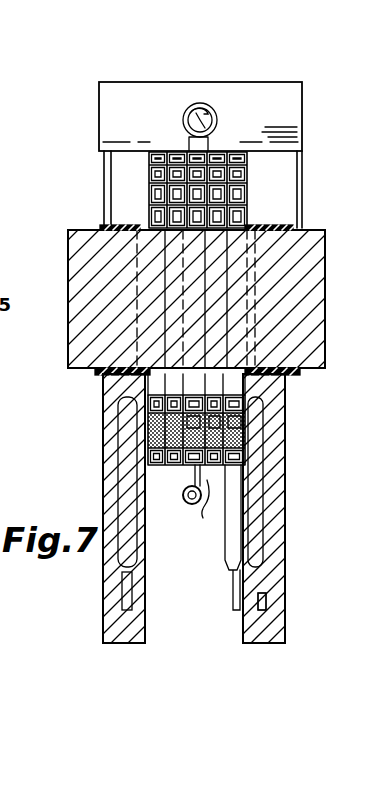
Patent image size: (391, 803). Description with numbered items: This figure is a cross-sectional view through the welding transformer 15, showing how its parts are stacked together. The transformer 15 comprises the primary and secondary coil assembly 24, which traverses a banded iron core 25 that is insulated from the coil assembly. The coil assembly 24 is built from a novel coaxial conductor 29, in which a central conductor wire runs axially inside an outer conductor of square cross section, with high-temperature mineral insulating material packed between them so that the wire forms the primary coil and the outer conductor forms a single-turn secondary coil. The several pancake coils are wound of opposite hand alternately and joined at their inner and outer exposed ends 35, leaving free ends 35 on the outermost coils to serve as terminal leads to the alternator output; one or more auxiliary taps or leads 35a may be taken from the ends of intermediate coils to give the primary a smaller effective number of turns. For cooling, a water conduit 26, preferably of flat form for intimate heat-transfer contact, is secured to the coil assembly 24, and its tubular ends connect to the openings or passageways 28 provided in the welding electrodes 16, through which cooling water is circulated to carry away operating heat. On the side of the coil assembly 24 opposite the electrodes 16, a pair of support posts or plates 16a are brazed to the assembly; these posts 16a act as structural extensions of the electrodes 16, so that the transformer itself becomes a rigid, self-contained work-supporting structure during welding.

The welding electrodes 16 is at (148, 88).
The openings or passageways 28 is at (218, 110).
The coaxial conductor 29 is at (247, 193).
The transformer 15 is at (330, 307).
The banded iron core 25 is at (317, 262).
The primary and secondary coil assembly 24 is at (240, 382).
The exposed ends 35 is at (243, 397).
The auxiliary taps or leads 35a is at (268, 597).
The water conduit 26 is at (210, 507).
The support posts or plates 16a is at (103, 633).